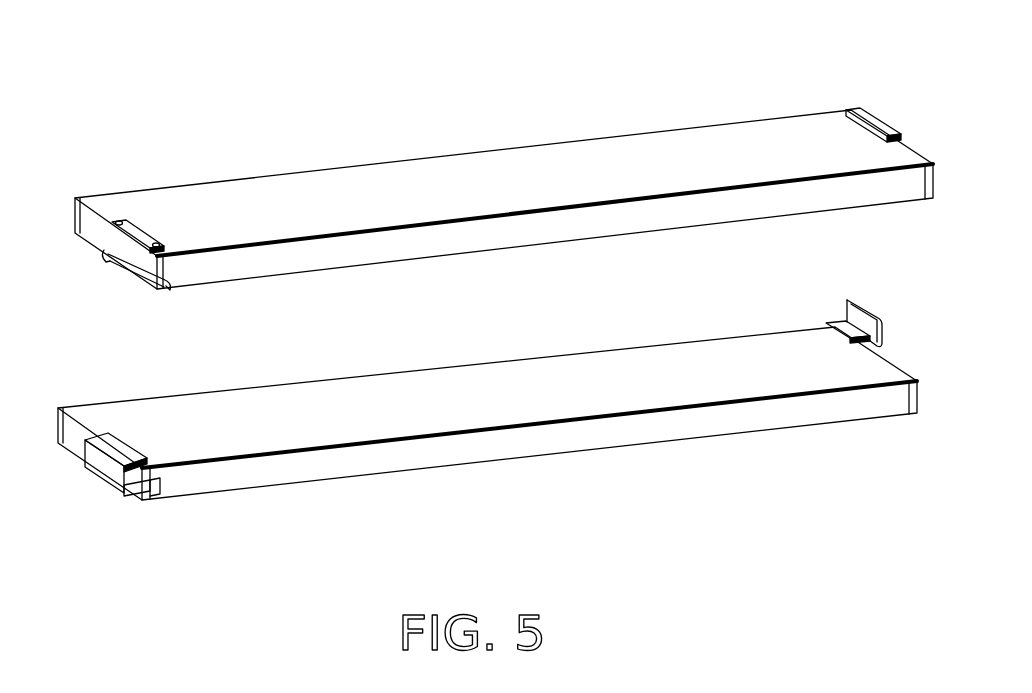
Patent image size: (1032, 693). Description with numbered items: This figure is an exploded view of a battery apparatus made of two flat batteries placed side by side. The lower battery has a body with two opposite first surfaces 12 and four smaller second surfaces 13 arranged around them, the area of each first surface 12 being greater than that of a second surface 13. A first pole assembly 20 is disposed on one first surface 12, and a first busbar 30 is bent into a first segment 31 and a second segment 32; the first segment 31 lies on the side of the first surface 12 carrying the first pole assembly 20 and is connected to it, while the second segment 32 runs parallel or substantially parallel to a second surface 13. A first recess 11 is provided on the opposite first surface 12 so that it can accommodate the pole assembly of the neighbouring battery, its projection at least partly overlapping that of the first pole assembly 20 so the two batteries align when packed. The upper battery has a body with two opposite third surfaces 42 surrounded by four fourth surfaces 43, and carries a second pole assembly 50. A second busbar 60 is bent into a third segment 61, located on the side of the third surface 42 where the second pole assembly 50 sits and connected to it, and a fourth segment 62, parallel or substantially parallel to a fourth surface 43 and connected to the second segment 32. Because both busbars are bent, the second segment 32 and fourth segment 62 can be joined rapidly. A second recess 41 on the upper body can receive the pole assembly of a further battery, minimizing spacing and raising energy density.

The first recess 11 is at (123, 487).
The first surface 12 is at (235, 415).
The second surface 13 is at (80, 463).
The first pole assembly 20 is at (157, 473).
The first busbar 30 is at (449, 382).
The first segment 31 is at (115, 442).
The second segment 32 is at (55, 448).
The second recess 41 is at (138, 270).
The third surface 42 is at (300, 200).
The fourth surface 43 is at (97, 242).
The second pole assembly 50 is at (124, 221).
The second busbar 60 is at (851, 71).
The third segment 61 is at (860, 115).
The fourth segment 62 is at (873, 98).